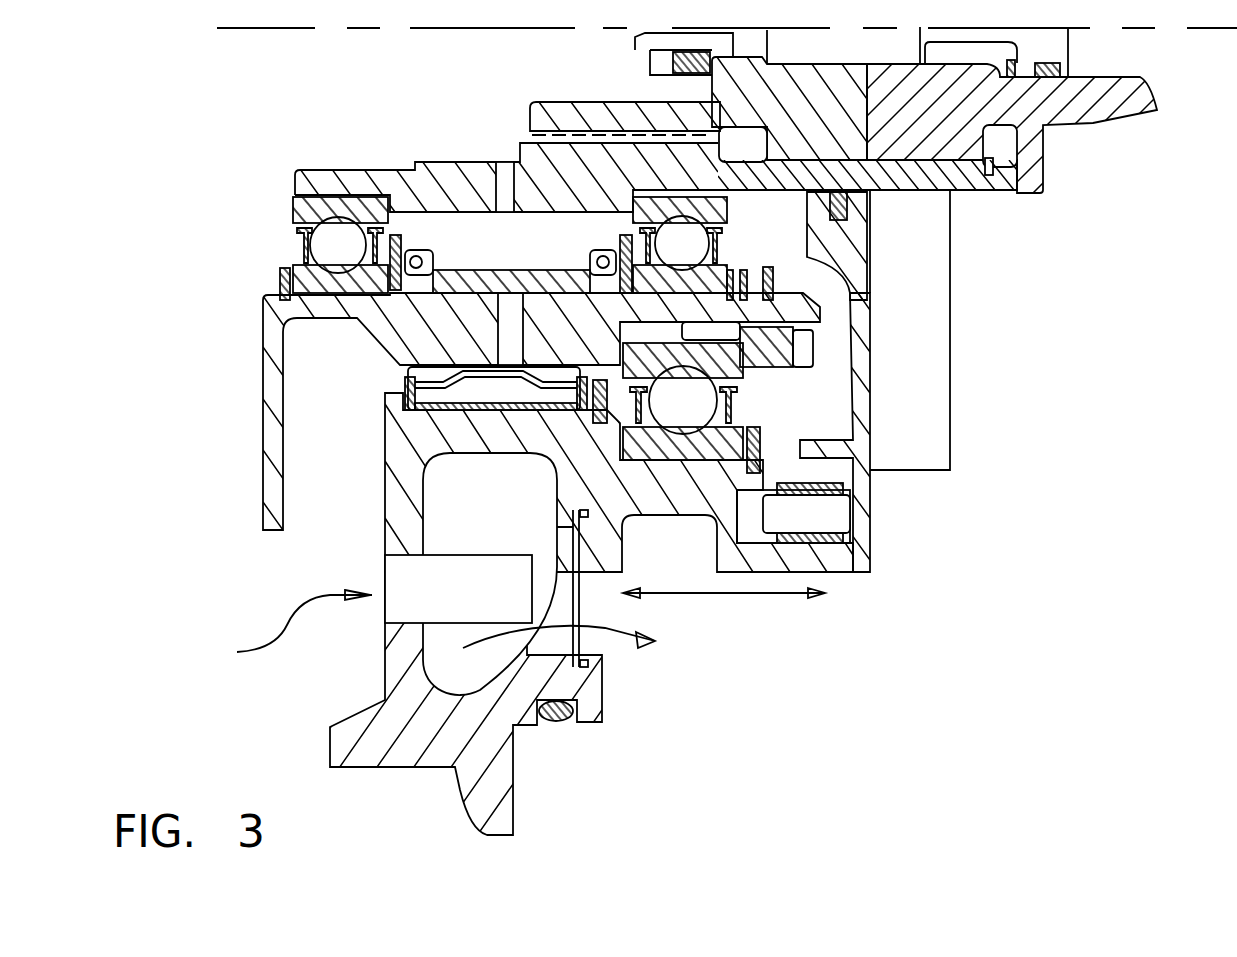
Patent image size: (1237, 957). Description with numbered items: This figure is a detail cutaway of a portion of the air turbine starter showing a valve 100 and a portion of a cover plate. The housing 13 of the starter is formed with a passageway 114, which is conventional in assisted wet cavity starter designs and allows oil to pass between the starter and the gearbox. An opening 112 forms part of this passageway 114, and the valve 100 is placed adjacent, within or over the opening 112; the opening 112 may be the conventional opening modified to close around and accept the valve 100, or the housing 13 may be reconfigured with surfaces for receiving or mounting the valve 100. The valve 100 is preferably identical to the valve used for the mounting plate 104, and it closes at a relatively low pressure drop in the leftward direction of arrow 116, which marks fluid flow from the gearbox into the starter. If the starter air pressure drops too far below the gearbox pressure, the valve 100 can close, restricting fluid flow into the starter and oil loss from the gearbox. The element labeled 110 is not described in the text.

The second housing assembly 13 is at (500, 803).
The valve 100 is at (467, 555).
The mounting plate 104 is at (870, 333).
The housing member 110 is at (869, 243).
The opening 112 is at (404, 553).
The passageway 114 is at (287, 623).
The arrow 116 is at (705, 597).